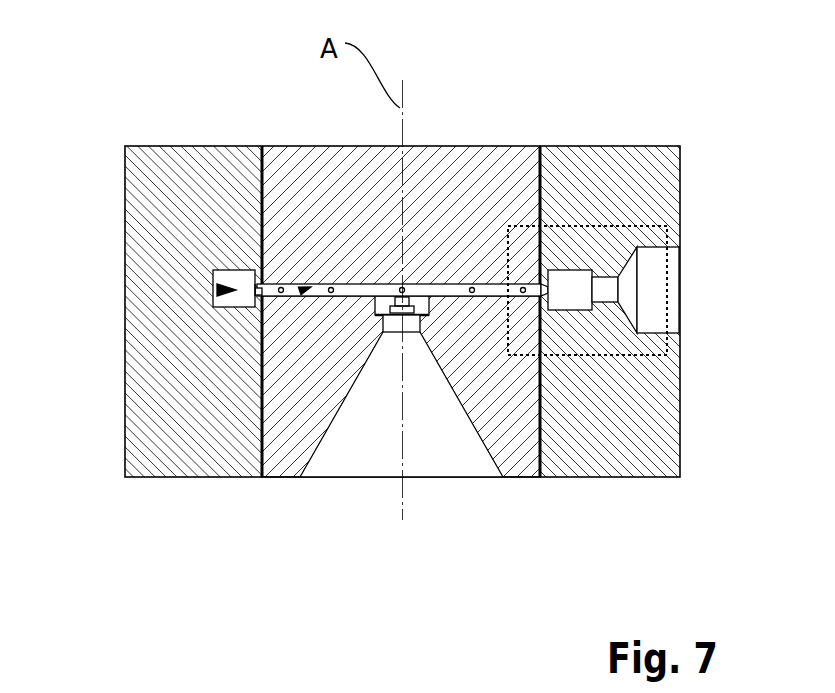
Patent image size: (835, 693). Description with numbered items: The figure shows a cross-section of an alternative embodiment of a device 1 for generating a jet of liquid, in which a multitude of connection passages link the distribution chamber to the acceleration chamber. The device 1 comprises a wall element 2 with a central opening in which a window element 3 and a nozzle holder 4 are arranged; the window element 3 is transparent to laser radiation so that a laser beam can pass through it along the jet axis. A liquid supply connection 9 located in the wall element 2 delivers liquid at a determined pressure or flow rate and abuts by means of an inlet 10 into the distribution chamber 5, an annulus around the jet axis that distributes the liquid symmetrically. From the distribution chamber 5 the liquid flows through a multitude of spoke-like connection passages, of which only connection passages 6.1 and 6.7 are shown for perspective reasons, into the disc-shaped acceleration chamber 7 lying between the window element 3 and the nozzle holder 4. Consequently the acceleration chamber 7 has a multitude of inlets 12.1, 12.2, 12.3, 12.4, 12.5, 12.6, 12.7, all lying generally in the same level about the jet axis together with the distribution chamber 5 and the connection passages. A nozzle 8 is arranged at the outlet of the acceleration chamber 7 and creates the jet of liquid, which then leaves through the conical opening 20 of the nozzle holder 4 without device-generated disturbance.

The device 1 is at (124, 122).
The wall element 2 is at (625, 440).
The window element 3 is at (339, 146).
The nozzle holder 4 is at (285, 462).
The distribution chamber 5 is at (214, 289).
The connection passage 6.1 is at (256, 287).
The connection passage 6.7 is at (541, 289).
The acceleration chamber 7 is at (303, 290).
The nozzle 8 is at (383, 335).
The liquid supply connection 9 is at (650, 293).
The inlet 10 is at (593, 285).
The inlet 12.1 is at (255, 308).
The inlet 12.2 is at (281, 286).
The inlet 12.3 is at (331, 286).
The inlet 12.4 is at (402, 287).
The inlet 12.5 is at (472, 287).
The inlet 12.6 is at (523, 287).
The inlet 12.7 is at (541, 296).
The conical opening 20 is at (457, 452).